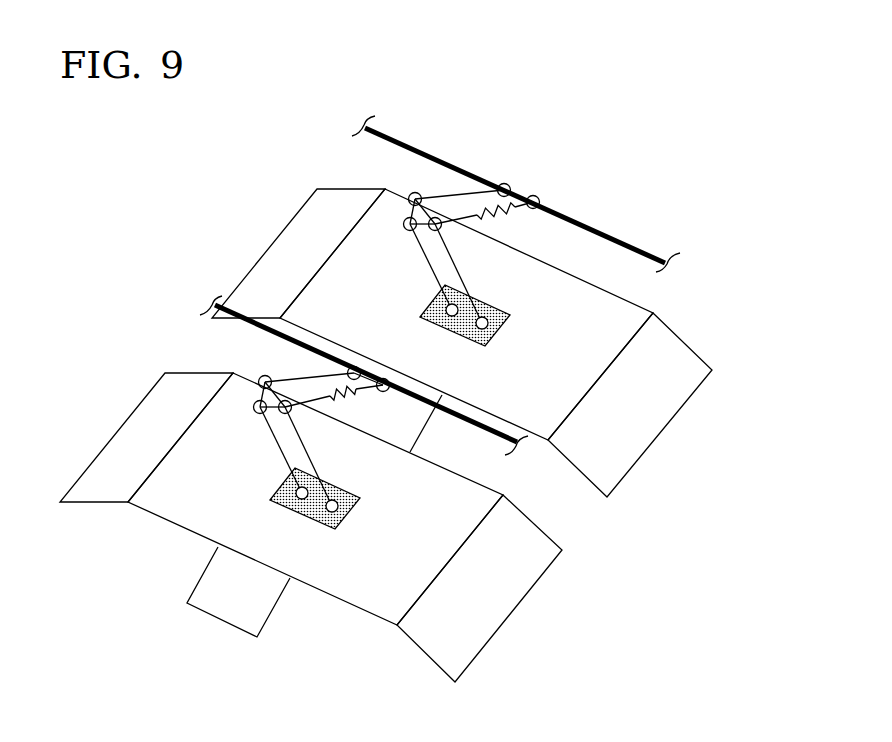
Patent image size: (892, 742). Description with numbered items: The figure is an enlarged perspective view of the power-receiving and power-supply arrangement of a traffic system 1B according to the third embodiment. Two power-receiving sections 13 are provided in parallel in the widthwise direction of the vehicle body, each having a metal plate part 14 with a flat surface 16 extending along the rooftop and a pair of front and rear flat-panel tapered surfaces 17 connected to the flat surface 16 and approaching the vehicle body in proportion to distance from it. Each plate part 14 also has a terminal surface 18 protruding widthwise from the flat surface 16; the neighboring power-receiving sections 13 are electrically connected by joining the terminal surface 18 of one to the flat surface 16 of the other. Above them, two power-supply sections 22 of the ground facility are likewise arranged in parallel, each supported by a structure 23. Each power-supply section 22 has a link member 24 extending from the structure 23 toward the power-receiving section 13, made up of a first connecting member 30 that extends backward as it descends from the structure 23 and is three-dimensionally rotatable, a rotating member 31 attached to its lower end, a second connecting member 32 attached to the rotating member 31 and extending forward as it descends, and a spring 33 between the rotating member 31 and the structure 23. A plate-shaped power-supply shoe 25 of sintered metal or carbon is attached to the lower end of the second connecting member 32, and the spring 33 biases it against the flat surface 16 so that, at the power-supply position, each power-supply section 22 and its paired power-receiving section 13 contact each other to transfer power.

The traffic system 1B is at (745, 207).
The power-receiving section 13 is at (437, 435).
The plate part 14 is at (437, 435).
The flat surface 16 is at (593, 327).
The tapered surface 17 is at (320, 225).
The terminal surface 18 is at (257, 613).
The power-supply section 22 is at (352, 162).
The structure 23 is at (626, 245).
The link member 24 is at (298, 272).
The power-supply shoe 25 is at (493, 338).
The first connecting member 30 is at (438, 195).
The rotating member 31 is at (415, 192).
The second connecting member 32 is at (453, 264).
The spring 33 is at (517, 203).